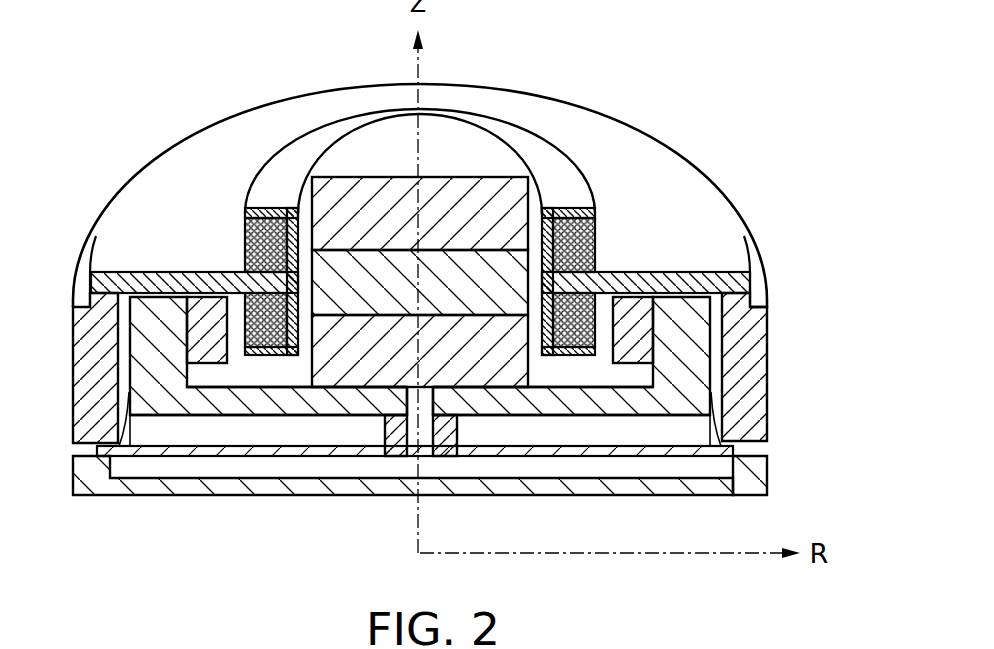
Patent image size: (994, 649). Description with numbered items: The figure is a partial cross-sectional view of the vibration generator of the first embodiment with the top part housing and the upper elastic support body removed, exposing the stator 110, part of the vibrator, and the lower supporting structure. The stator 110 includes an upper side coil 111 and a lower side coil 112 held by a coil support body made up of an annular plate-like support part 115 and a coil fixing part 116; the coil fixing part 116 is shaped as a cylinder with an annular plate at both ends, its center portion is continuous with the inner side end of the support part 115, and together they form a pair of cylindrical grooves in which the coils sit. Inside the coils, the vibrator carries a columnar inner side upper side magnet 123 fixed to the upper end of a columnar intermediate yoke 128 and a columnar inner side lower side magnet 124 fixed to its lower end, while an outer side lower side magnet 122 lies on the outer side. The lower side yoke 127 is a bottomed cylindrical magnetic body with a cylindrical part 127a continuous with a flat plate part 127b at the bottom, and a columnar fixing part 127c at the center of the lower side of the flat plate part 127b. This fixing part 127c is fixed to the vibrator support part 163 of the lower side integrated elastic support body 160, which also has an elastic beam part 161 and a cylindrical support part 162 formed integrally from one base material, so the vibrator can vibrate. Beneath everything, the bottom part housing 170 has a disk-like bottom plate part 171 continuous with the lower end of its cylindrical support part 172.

The stator 110 is at (578, 140).
The upper side coil 111 is at (270, 208).
The lower side coil 112 is at (243, 316).
The support part 115 is at (675, 290).
The coil fixing part 116 is at (583, 208).
The outer side lower side magnet 122 is at (645, 313).
The inner side upper side magnet 123 is at (352, 203).
The inner side lower side magnet 124 is at (500, 373).
The lower side yoke 127 is at (482, 421).
The cylindrical part 127a is at (697, 393).
The flat plate part 127b is at (474, 397).
The fixing part 127c is at (412, 450).
The intermediate yoke 128 is at (466, 262).
The lower side integrated elastic support body 160 is at (486, 433).
The elastic beam part 161 is at (663, 456).
The cylindrical support part 162 is at (748, 368).
The vibrator support part 163 is at (398, 457).
The bottom part housing 170 is at (464, 433).
The bottom plate part 171 is at (617, 483).
The cylindrical support part 172 is at (752, 476).